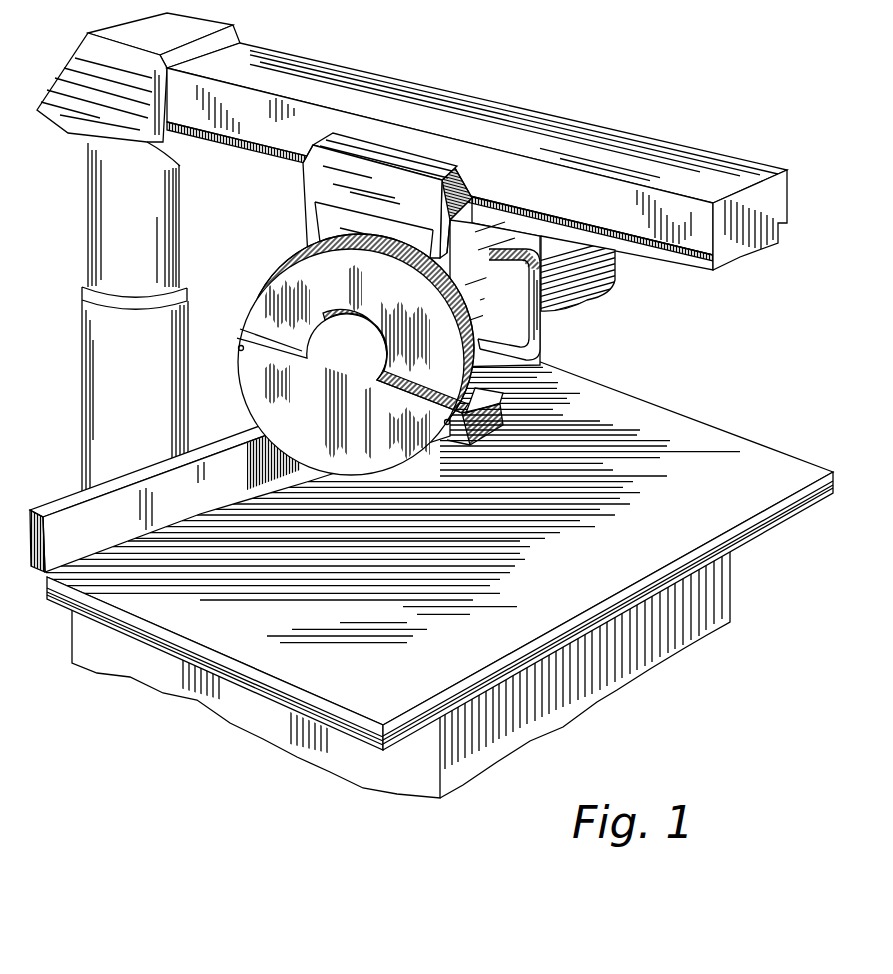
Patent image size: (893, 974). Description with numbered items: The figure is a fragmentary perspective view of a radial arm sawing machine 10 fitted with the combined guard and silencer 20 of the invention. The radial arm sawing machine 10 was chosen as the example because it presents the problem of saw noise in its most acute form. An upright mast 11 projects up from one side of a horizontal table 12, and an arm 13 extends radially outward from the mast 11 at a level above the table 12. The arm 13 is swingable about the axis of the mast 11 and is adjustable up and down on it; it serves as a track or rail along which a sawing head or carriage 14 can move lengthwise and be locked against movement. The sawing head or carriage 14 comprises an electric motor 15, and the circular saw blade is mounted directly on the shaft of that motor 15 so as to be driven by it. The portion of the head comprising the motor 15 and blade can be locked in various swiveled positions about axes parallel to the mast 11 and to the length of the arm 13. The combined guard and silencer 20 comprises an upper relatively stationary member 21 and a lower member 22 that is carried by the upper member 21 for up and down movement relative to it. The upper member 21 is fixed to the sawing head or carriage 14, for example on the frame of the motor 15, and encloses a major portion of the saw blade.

The radial arm sawing machine 10 is at (429, 405).
The upright mast 11 is at (100, 420).
The horizontal table 12 is at (173, 620).
The arm 13 is at (402, 88).
The sawing head or carriage 14 is at (306, 190).
The electric motor 15 is at (578, 252).
The combined guard and silencer 20 is at (437, 475).
The upper relatively stationary member 21 is at (298, 263).
The lower member 22 is at (345, 455).